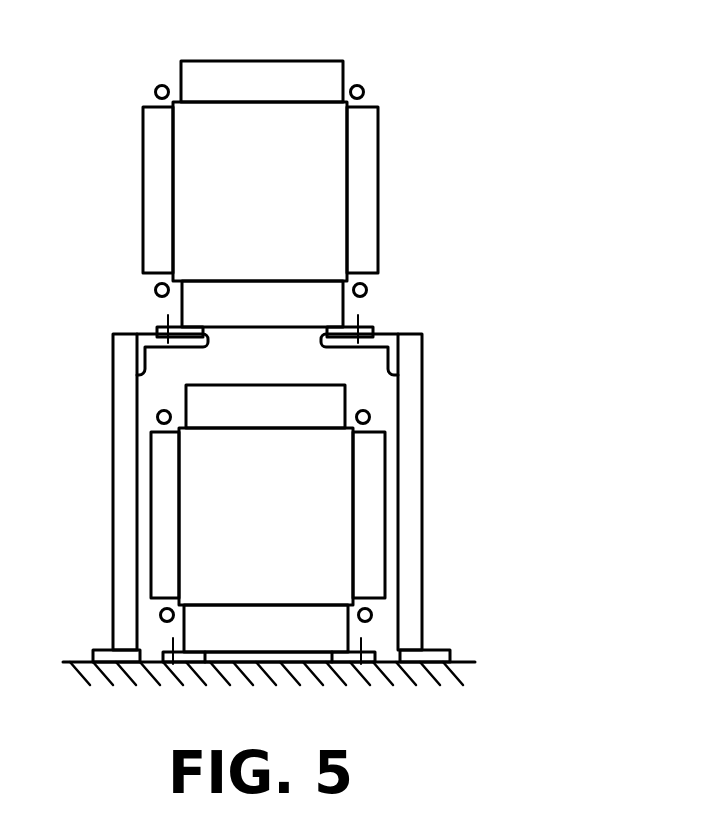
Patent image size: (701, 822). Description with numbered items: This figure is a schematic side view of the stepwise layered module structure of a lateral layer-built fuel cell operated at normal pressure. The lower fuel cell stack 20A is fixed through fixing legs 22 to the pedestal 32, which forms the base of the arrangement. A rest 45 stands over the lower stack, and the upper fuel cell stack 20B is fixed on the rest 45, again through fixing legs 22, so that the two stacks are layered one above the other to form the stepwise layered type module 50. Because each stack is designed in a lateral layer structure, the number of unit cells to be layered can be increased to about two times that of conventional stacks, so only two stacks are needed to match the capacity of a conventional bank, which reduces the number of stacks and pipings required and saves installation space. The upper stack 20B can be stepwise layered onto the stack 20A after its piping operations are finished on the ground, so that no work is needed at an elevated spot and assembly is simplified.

The stepwise layered type module 50 is at (367, 356).
The fuel cell stack 20B is at (367, 222).
The fuel cell stack 20A is at (325, 397).
The fixing legs 22 is at (162, 325).
The rest 45 is at (413, 378).
The pedestal 32 is at (458, 678).